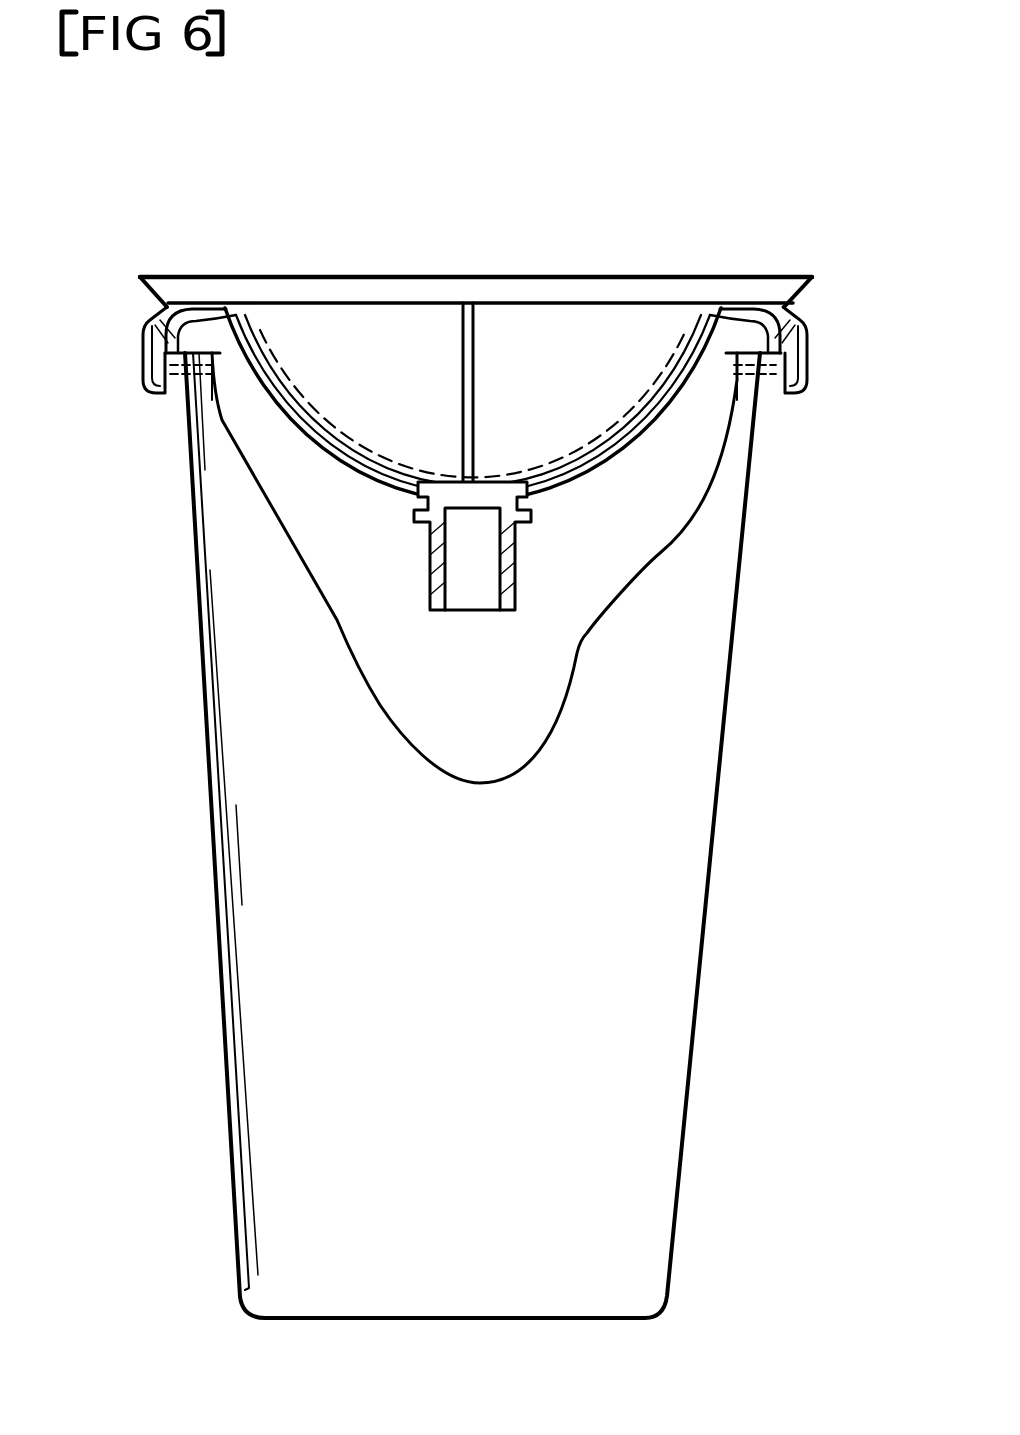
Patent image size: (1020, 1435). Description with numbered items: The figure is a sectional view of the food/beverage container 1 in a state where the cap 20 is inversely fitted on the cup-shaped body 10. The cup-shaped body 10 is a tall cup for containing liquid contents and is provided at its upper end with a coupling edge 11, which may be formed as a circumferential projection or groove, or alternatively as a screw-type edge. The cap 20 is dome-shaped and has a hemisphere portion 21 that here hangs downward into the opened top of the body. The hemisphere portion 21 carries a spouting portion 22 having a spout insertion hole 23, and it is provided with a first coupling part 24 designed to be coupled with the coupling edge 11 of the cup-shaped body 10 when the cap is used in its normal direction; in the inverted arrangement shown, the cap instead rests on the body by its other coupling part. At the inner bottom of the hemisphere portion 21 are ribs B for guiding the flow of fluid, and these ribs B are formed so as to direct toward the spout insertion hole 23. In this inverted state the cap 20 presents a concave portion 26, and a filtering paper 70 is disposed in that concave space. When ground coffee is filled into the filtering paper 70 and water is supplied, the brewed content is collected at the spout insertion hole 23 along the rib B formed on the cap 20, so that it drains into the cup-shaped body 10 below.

The food/beverage container 1 is at (745, 857).
The cup-shaped body 10 is at (222, 1020).
The coupling edge 11 is at (192, 418).
The cap 20 is at (725, 300).
The hemisphere portion 21 is at (362, 472).
The spouting portion 22 is at (432, 588).
The spout insertion hole 23 is at (477, 578).
The first coupling part 24 is at (187, 275).
The concave portion 26 is at (494, 322).
The filtering paper 70 is at (230, 272).
The ribs B is at (302, 402).